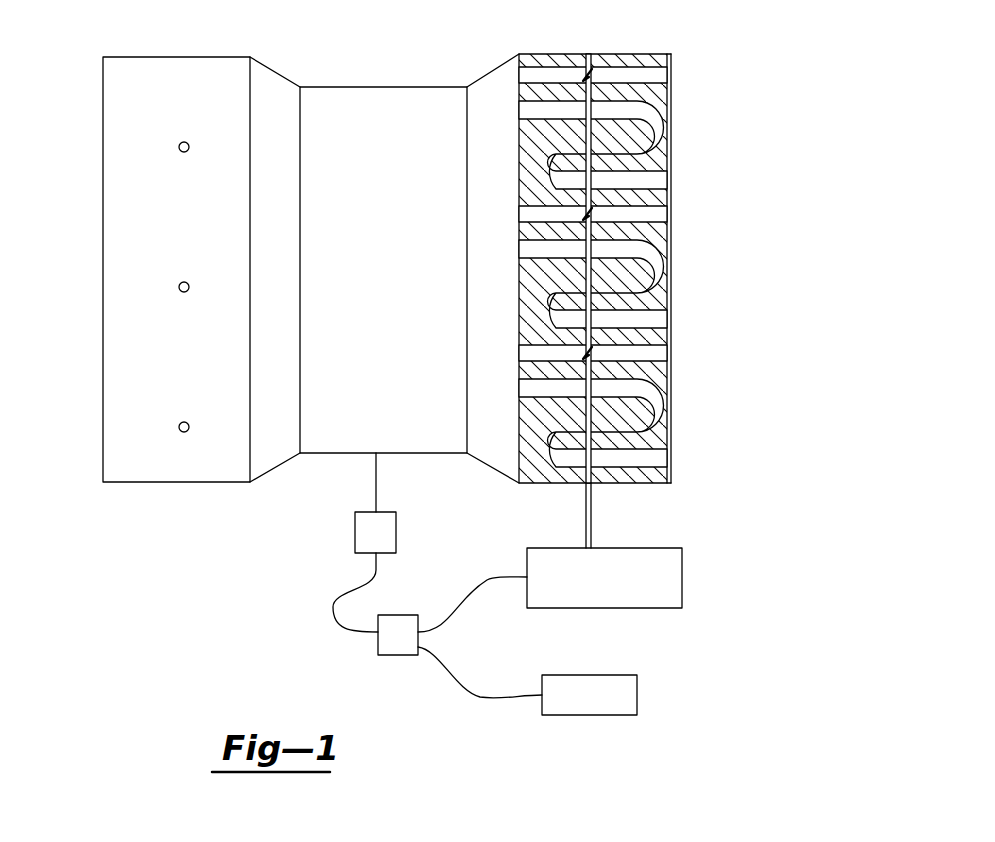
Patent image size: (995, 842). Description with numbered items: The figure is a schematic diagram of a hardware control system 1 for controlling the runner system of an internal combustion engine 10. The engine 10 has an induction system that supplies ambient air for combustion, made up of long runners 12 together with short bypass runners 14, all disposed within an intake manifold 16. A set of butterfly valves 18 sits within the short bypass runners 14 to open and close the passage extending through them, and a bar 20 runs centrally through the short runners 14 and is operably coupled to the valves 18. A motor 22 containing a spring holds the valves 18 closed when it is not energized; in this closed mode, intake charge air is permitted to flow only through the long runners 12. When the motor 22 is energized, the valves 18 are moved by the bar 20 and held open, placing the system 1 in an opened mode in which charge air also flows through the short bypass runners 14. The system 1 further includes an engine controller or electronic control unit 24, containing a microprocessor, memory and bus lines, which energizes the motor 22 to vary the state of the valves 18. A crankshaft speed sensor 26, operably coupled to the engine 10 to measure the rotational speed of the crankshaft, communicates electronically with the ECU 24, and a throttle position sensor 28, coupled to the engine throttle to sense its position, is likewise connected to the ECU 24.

The control system 1 is at (727, 473).
The internal combustion engine 10 is at (337, 87).
The long runners 12 is at (653, 182).
The short bypass runners 14 is at (653, 72).
The intake manifold 16 is at (628, 53).
The butterfly valves 18 is at (588, 72).
The bar 20 is at (591, 513).
The motor 22 is at (682, 585).
The electronic control unit 24 is at (378, 641).
The crankshaft speed sensor 26 is at (355, 526).
The throttle position sensor 28 is at (637, 695).